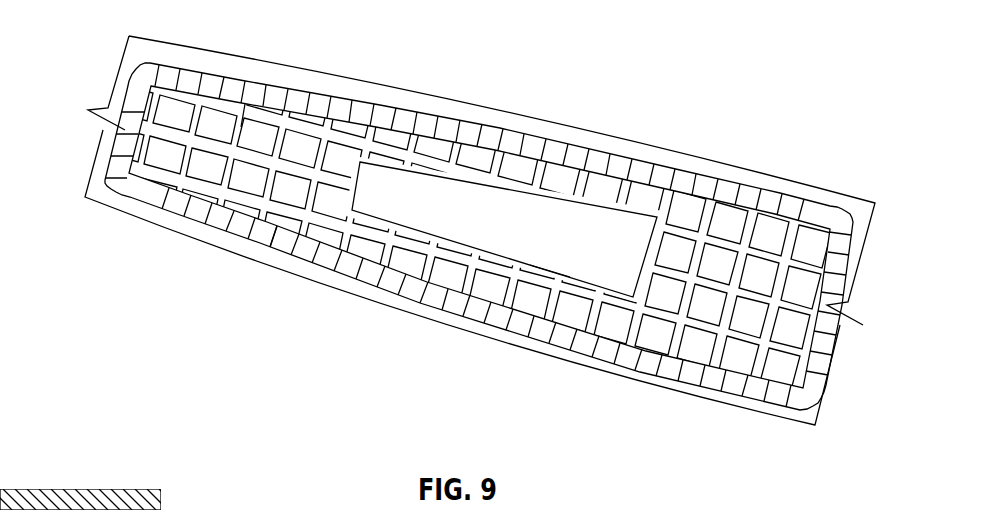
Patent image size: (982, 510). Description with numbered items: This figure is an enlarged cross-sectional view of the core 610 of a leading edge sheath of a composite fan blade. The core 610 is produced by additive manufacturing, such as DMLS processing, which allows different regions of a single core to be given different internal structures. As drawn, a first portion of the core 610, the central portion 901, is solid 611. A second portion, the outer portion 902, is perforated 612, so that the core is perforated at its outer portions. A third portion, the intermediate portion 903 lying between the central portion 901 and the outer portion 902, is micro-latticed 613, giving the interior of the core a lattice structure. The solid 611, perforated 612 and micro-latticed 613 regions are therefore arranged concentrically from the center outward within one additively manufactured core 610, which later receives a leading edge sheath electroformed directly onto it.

The core 610 is at (848, 268).
The solid 611 is at (432, 193).
The perforated 612 is at (722, 192).
The micro-latticed 613 is at (757, 292).
The central portion 901 is at (548, 273).
The outer portion 902 is at (265, 243).
The intermediate portion 903 is at (253, 157).